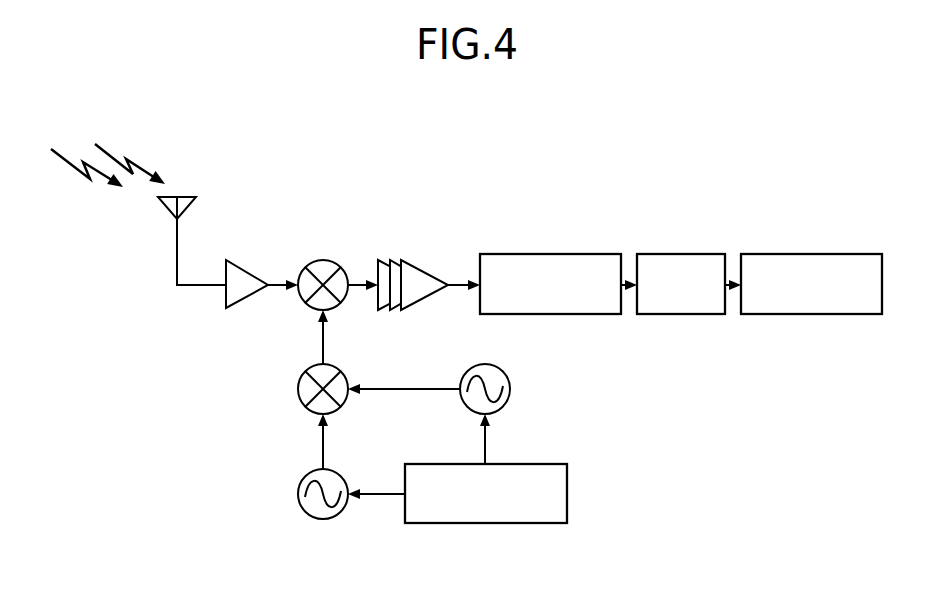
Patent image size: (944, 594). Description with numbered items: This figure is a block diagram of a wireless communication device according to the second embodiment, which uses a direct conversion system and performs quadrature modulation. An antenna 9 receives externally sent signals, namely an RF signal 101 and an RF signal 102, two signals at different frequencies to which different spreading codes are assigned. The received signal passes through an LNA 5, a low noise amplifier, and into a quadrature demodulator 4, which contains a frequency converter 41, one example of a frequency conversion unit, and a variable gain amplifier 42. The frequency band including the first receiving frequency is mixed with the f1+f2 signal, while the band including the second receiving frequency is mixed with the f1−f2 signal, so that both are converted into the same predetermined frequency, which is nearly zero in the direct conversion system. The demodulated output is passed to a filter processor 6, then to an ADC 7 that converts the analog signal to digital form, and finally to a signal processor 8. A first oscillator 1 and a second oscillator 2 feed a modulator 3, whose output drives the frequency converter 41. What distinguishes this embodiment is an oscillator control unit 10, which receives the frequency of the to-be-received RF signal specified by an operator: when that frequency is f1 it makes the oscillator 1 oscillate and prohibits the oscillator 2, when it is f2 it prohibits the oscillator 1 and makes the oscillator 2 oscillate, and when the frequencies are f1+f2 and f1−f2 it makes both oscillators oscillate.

The RF signal 101 is at (63, 155).
The RF signal 102 is at (134, 155).
The antenna 9 is at (187, 193).
The LNA (Low Noise Amplifier) 5 is at (247, 263).
The quadrature demodulator 4 is at (442, 213).
The frequency converter 41 is at (320, 257).
The variable gain amplifier 42 is at (418, 263).
The filter processor 6 is at (525, 252).
The ADC (Analog Digital Converter) 7 is at (675, 252).
The signal processor 8 is at (810, 252).
The modulator 3 is at (293, 387).
The second oscillator 2 is at (507, 388).
The first oscillator 1 is at (293, 492).
The oscillator control unit 10 is at (564, 492).